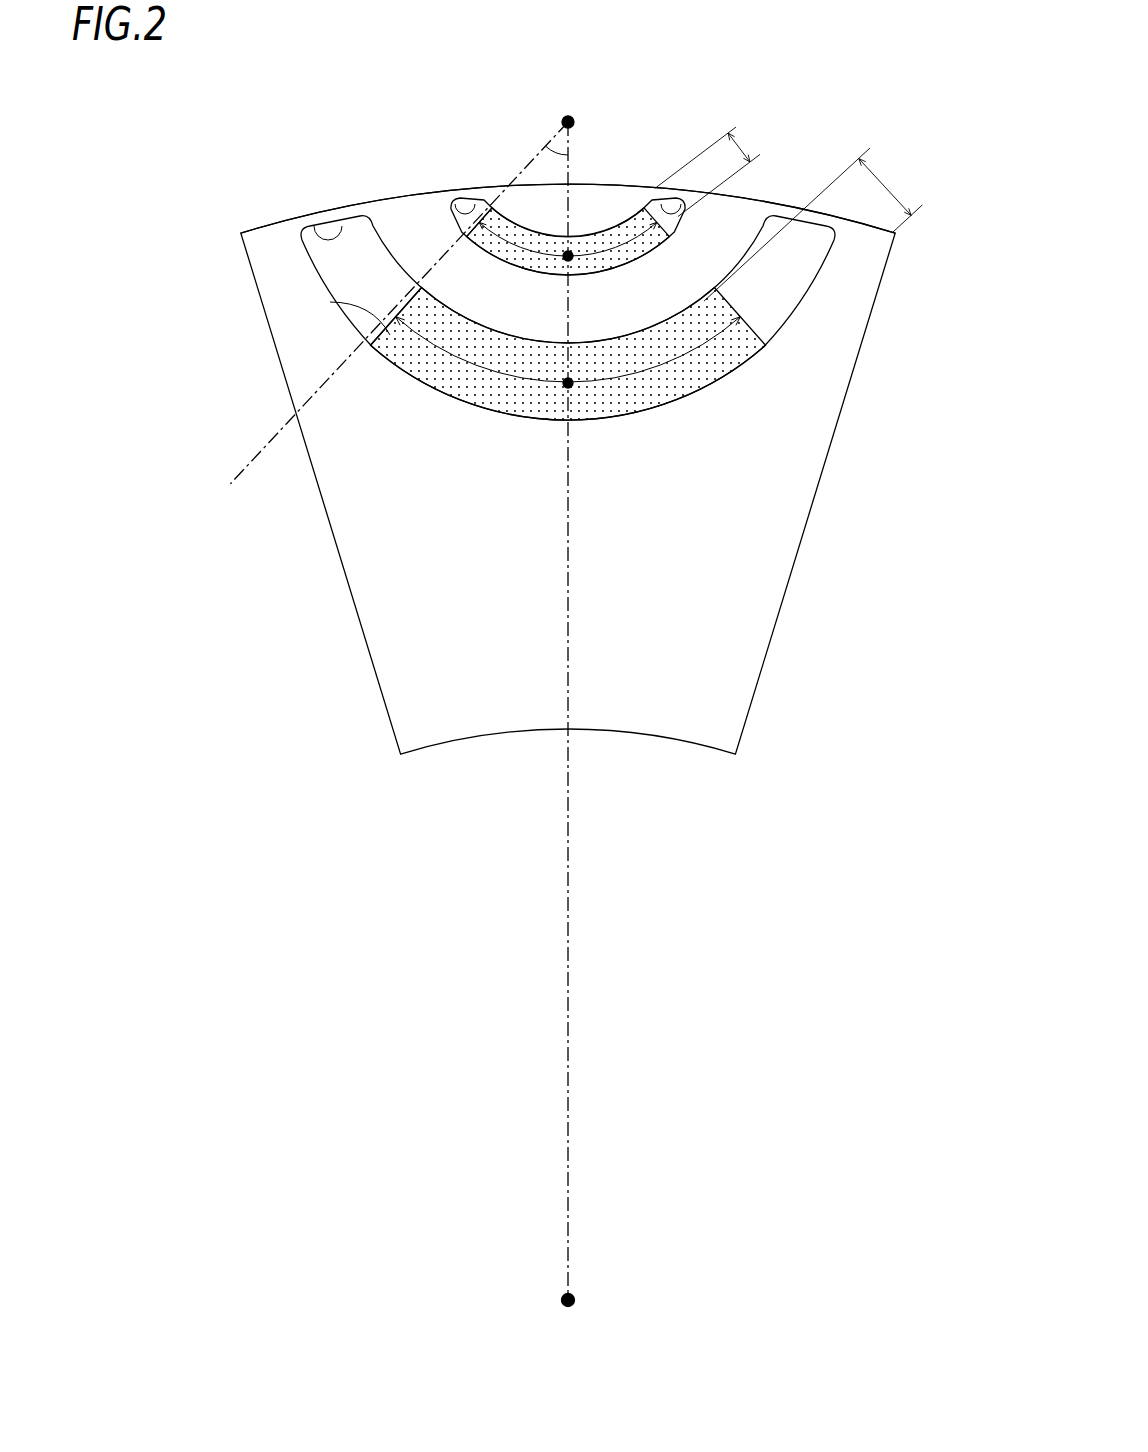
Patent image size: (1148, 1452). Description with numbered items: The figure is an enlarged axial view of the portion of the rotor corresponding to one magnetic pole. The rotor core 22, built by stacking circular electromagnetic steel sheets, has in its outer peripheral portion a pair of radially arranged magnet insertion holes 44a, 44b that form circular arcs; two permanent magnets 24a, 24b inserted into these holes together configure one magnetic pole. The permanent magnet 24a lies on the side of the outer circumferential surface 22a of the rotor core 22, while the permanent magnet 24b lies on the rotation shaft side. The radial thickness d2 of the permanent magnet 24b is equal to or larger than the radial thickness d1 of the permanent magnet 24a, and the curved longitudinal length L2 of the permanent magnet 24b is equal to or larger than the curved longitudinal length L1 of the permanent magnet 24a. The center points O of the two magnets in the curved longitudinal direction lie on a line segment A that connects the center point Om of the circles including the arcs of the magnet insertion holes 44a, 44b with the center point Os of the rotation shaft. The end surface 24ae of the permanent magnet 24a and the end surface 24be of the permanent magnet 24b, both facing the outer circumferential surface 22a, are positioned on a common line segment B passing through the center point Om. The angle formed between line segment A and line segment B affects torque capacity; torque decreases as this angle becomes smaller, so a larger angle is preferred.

The rotor core 22 is at (762, 602).
The outer circumferential surface 22a is at (767, 200).
The permanent magnet 24a is at (608, 222).
The permanent magnet 24b is at (708, 370).
The end surface 24ae is at (472, 192).
The end surface 24be is at (330, 302).
The magnet insertion hole 44a is at (452, 207).
The magnet insertion hole 44b is at (314, 225).
The line segment A is at (571, 963).
The line segment B is at (262, 448).
The center point Om is at (572, 115).
The center point Os is at (575, 1302).
The center point O is at (565, 258).
The curved longitudinal length L1 is at (568, 249).
The curved longitudinal length L2 is at (568, 358).
The radial thickness d1 is at (709, 172).
The radial thickness d2 is at (813, 224).